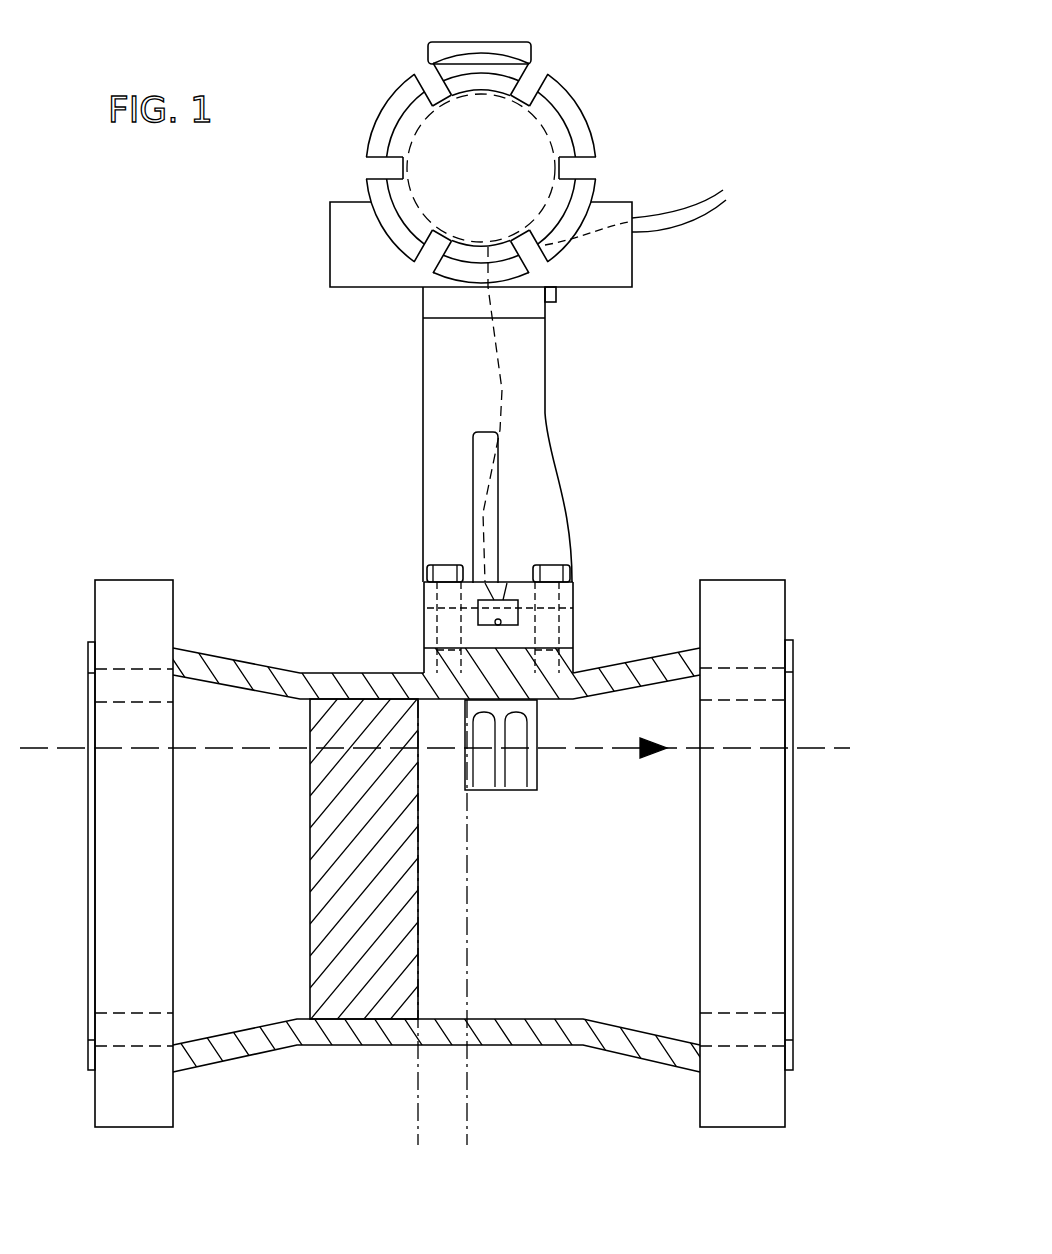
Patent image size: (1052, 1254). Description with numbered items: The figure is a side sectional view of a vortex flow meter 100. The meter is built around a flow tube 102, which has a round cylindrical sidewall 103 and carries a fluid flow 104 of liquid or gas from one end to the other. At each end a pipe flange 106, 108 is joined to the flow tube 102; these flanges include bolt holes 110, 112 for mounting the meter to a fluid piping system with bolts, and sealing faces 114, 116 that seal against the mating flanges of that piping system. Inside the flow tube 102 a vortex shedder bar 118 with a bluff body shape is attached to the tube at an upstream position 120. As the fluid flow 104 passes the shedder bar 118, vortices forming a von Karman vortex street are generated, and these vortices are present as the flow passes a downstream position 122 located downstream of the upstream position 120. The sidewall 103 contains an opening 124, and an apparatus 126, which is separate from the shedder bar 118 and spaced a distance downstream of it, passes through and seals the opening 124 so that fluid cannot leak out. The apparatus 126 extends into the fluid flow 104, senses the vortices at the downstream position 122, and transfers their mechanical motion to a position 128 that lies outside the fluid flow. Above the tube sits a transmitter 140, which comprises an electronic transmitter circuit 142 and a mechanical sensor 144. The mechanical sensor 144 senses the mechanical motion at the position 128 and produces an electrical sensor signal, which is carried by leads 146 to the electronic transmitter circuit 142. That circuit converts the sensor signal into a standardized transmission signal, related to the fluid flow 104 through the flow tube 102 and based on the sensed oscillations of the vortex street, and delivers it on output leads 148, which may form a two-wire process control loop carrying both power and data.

The vortex flow meter 100 is at (656, 45).
The flow tube 102 is at (198, 1070).
The sidewall 103 is at (560, 700).
The fluid flow 104 is at (652, 760).
The pipe flange 106 is at (123, 580).
The pipe flange 108 is at (733, 580).
The bolt holes 110 is at (125, 1012).
The bolt holes 112 is at (750, 1012).
The sealing face 114 is at (85, 662).
The sealing face 116 is at (795, 656).
The vortex shedder bar 118 is at (383, 879).
The upstream position 120 is at (418, 1087).
The downstream position 122 is at (468, 1080).
The opening 124 is at (577, 670).
The apparatus 126 is at (543, 770).
The position 128 is at (510, 592).
The transmitter 140 is at (463, 42).
The electronic transmitter circuit 142 is at (388, 152).
The mechanical sensor 144 is at (510, 570).
The leads 146 is at (502, 388).
The output leads 148 is at (683, 222).